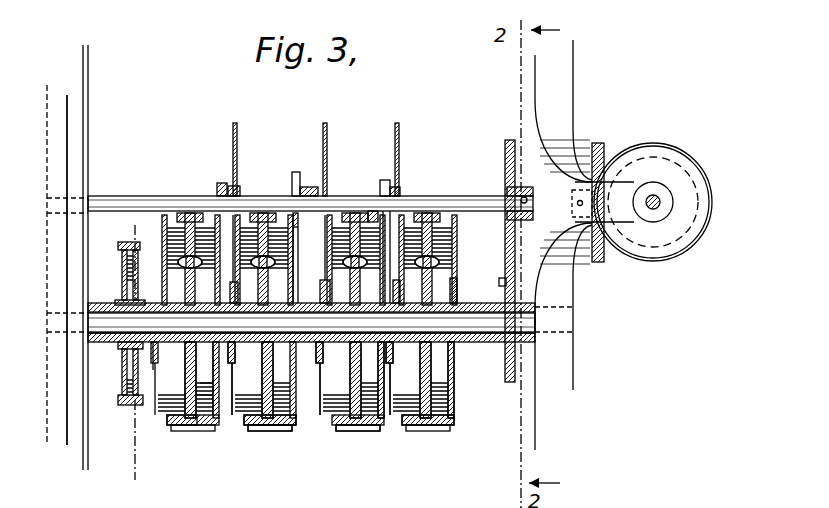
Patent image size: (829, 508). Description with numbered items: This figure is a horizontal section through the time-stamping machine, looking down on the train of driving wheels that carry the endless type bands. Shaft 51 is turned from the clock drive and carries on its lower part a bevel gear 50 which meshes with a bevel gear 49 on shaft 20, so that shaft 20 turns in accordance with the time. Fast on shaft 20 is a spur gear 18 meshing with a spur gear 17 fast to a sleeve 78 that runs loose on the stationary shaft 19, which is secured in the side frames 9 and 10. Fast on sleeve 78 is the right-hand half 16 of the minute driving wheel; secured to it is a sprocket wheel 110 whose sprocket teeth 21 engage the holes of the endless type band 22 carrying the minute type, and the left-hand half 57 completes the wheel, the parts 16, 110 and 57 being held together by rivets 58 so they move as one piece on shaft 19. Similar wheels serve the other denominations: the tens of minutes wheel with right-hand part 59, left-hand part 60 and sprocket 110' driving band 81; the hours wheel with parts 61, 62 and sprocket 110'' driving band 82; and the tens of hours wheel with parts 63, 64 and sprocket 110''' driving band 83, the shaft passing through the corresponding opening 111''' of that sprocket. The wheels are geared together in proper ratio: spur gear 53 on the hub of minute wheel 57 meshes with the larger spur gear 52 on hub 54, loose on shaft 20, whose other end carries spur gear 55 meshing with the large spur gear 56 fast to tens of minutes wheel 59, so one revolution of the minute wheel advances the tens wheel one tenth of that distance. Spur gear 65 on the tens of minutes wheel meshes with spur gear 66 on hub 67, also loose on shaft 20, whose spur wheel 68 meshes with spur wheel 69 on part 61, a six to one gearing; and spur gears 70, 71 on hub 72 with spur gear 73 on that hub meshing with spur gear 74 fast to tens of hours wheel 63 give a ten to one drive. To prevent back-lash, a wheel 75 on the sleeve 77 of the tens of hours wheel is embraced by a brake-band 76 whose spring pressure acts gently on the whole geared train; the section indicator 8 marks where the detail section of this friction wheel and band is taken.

The section line 8- 8 is at (160, 228).
The side frame 9 is at (78, 160).
The side frame 10 is at (570, 92).
The right-hand half of minute driving wheel 16 is at (445, 382).
The spur gear 17 is at (507, 270).
The spur gear 18 is at (505, 160).
The stationary shaft 19 is at (102, 320).
The shaft 20 is at (100, 203).
The sprocket teeth 21 is at (427, 420).
The endless type band 22 is at (453, 426).
The bevel gear 49 is at (600, 262).
The bevel gear 50 is at (668, 258).
The shaft 51 is at (660, 202).
The spur gear 52 is at (399, 160).
The spur gear 53 is at (397, 285).
The hub 54 is at (397, 196).
The spur gear 55 is at (383, 180).
The spur gear 56 is at (372, 218).
The left-hand half of minute driving wheel 57 is at (412, 405).
The rivet 58 is at (182, 262).
The right-hand part of tens of minutes driving wheel 59 is at (355, 385).
The left-hand part of tens of minutes driving wheel 60 is at (340, 390).
The part of hours driving wheel 61 is at (265, 390).
The part of hours driving wheel 62 is at (232, 363).
The part of tens of hours driving wheel 63 is at (210, 395).
The part of tens of hours driving wheel 64 is at (190, 372).
The spur gear 65 is at (322, 362).
The spur gear 66 is at (327, 140).
The hub 67 is at (310, 188).
The spur wheel 68 is at (293, 178).
The spur wheel 69 is at (306, 258).
The spur gear 70 is at (235, 430).
The spur gear 71 is at (237, 137).
The hub 72 is at (240, 193).
The spur gear 73 is at (220, 185).
The spur gear 74 is at (200, 430).
The wheel 75 is at (122, 395).
The brake-band 76 is at (128, 403).
The sleeve 77 is at (165, 345).
The sleeve 78 is at (468, 343).
The endless band 81 is at (372, 420).
The endless band 82 is at (283, 424).
The endless band 83 is at (197, 420).
The sprocket wheel 110 is at (475, 278).
The sprocket 110' is at (358, 442).
The sprocket 110'' is at (272, 456).
The sprocket 110''' is at (155, 447).
The thread 111''' is at (159, 393).